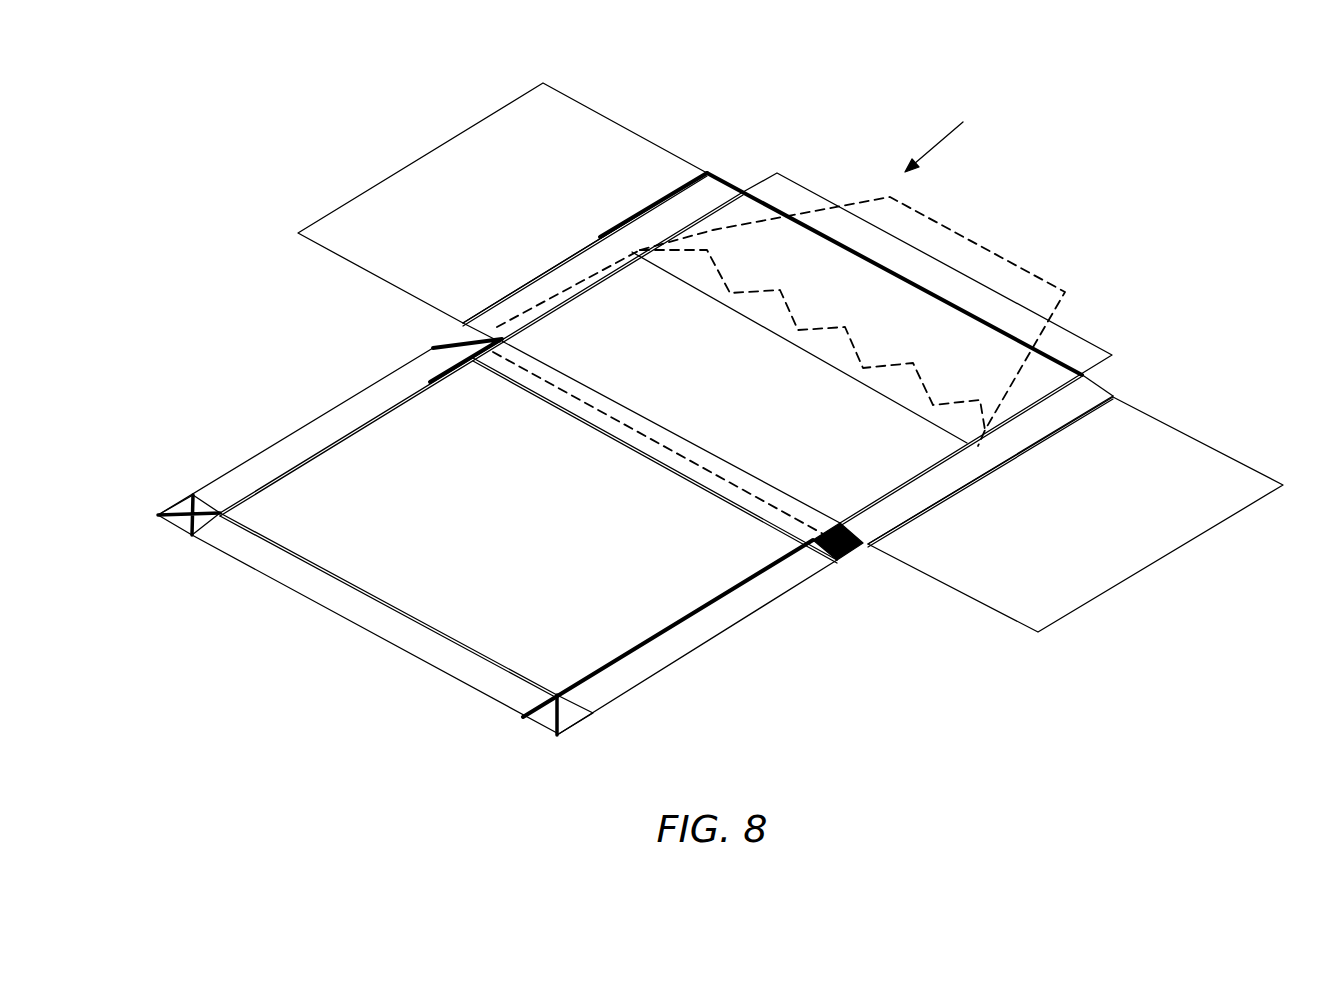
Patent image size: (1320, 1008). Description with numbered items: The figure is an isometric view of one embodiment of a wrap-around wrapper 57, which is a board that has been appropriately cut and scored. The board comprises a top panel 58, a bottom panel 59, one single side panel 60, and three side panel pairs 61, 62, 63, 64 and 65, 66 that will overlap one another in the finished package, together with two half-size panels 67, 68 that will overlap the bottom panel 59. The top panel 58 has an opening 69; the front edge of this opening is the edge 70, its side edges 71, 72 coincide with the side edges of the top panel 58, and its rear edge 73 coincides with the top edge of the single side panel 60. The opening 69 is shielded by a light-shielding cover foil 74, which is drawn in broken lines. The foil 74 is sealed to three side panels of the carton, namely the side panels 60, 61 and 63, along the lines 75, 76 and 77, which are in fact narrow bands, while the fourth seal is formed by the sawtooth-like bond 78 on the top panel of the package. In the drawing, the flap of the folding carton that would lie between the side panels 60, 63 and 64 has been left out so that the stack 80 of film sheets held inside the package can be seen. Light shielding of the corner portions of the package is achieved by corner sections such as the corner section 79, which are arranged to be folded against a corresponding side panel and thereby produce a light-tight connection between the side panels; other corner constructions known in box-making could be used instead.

The wrapper 57 is at (958, 131).
The top panel 58 is at (757, 210).
The bottom panel 59 is at (357, 448).
The single side panel 60 is at (427, 383).
The side panel 61 is at (715, 215).
The side panel 62 is at (250, 468).
The side panel 63 is at (1087, 390).
The side panel 64 is at (677, 650).
The side panel 65 is at (1070, 343).
The side panel 66 is at (418, 652).
The half-size panel 67 is at (413, 170).
The half-size panel 68 is at (1153, 548).
The opening 69 is at (704, 380).
The front edge 70 is at (887, 400).
The side edge 71 is at (577, 300).
The side edge 72 is at (863, 502).
The rear edge 73 is at (717, 457).
The light-shielding cover foil 74 is at (703, 170).
The sealing line 75 is at (605, 400).
The sealing line 76 is at (507, 327).
The sealing line 77 is at (933, 505).
The sawtooth-like bond 78 is at (860, 347).
The corner section 79 is at (190, 527).
The stack of film sheets 80 is at (988, 258).